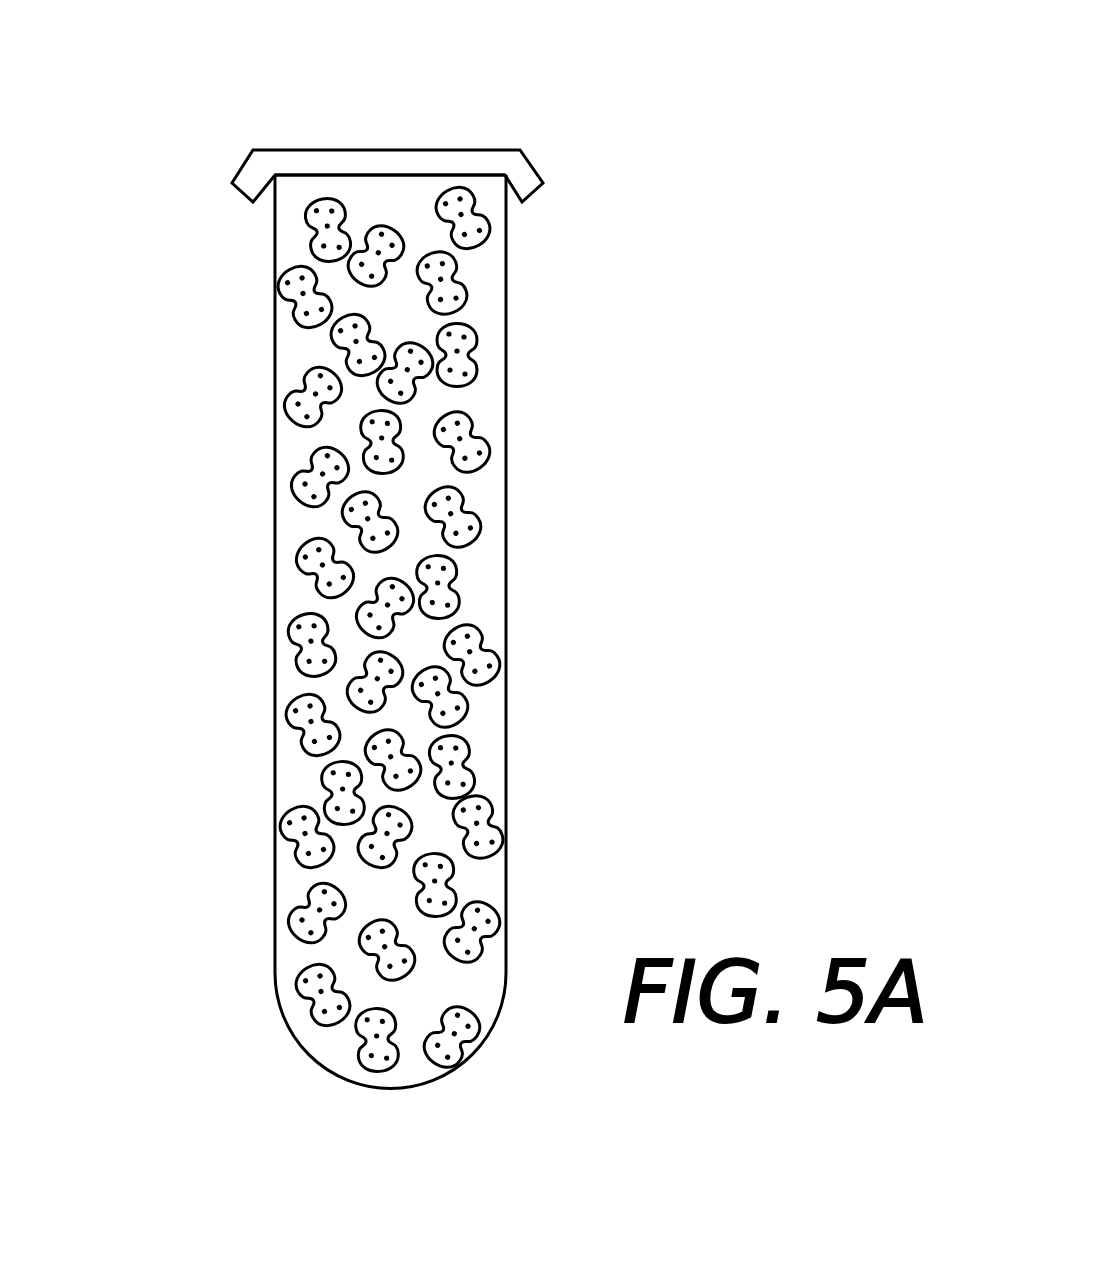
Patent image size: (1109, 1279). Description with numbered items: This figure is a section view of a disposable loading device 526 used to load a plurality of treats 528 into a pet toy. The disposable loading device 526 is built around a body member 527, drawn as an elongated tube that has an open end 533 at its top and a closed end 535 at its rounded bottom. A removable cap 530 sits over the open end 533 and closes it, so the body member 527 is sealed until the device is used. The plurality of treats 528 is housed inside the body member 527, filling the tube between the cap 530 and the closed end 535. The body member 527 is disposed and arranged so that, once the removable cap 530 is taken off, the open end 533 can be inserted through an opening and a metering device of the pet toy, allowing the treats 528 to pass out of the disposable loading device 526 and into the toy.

The disposable loading device 526 is at (503, 608).
The body member 527 is at (273, 503).
The treats 528 is at (466, 732).
The removable cap 530 is at (530, 153).
The open end 533 is at (358, 177).
The closed end 535 is at (448, 1075).